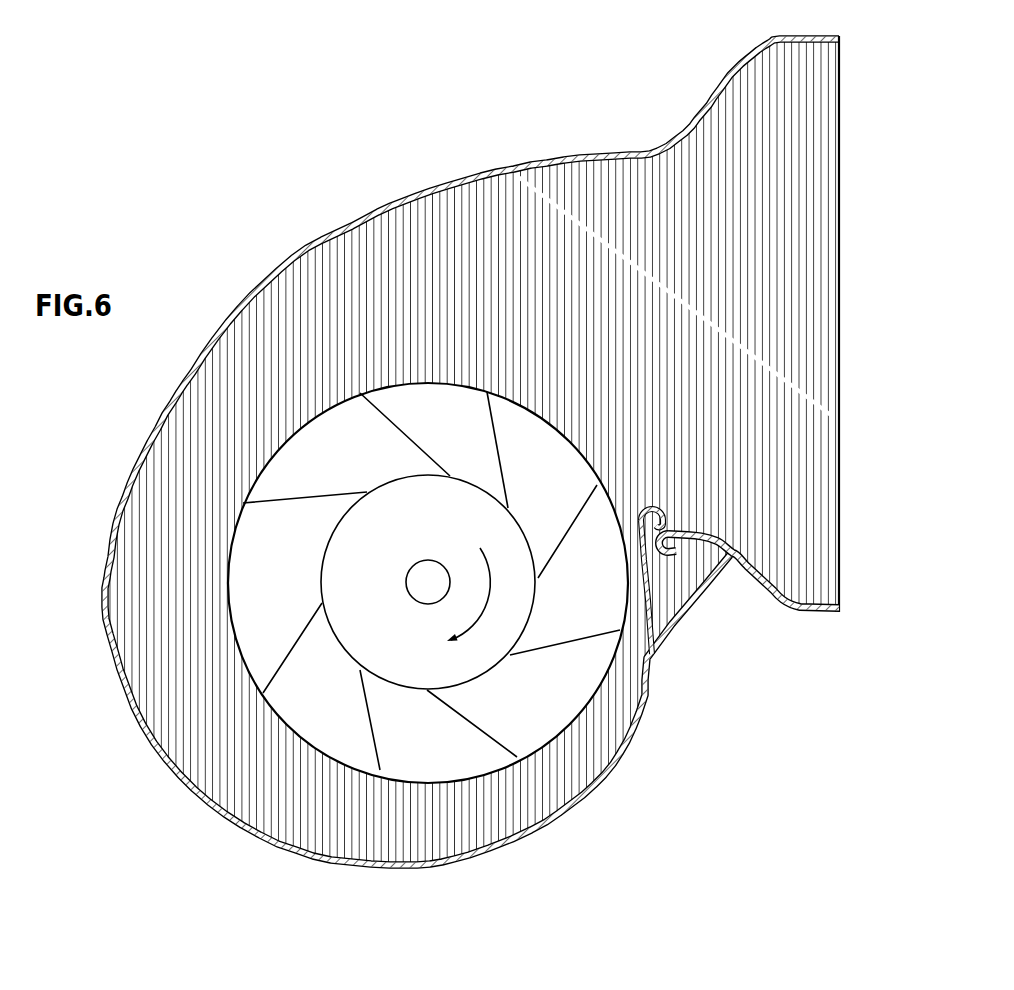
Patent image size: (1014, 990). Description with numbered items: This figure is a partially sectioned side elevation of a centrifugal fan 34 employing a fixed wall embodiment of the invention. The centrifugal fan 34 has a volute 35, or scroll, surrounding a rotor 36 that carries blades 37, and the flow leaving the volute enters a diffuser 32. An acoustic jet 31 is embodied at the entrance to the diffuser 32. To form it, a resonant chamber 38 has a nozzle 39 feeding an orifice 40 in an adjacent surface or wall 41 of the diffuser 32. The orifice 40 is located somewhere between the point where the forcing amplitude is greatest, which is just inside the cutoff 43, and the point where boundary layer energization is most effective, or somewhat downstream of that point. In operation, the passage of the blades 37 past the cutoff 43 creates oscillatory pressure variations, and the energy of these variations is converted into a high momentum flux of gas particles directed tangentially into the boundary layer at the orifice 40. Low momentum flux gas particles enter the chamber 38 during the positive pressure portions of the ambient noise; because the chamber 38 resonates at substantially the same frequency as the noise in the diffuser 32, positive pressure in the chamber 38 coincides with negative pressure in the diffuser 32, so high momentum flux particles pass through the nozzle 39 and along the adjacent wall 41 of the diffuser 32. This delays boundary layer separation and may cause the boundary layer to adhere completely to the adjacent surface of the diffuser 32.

The acoustic jet 31 is at (772, 633).
The diffuser 32 is at (779, 541).
The centrifugal fan 34 is at (760, 715).
The volute 35 is at (100, 581).
The rotor 36 is at (428, 570).
The blades 37 is at (505, 487).
The resonant chamber 38 is at (708, 571).
The nozzle 39 is at (669, 518).
The orifice 40 is at (672, 533).
The wall 41 is at (749, 541).
The cutoff 43 is at (644, 556).